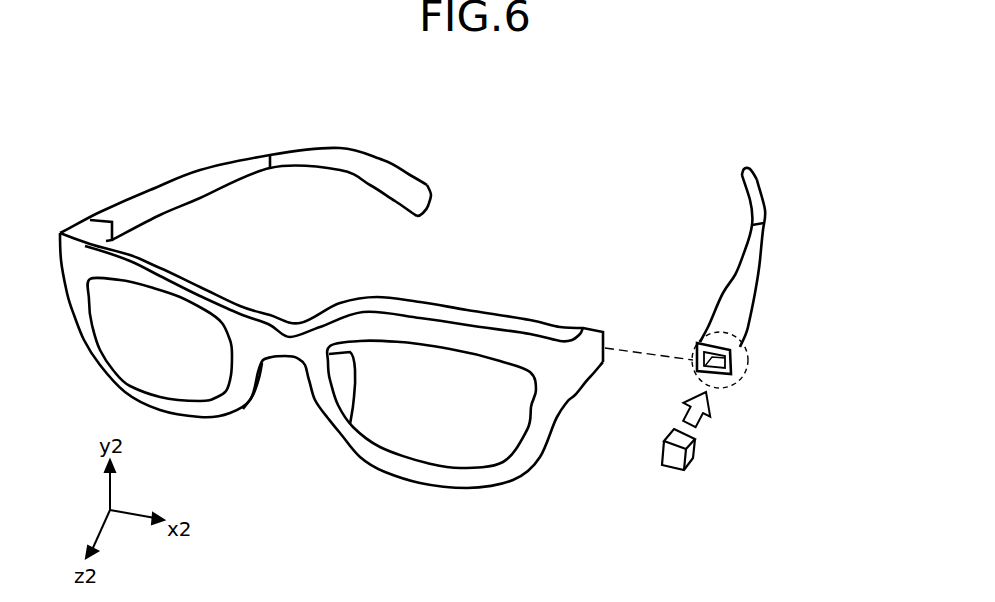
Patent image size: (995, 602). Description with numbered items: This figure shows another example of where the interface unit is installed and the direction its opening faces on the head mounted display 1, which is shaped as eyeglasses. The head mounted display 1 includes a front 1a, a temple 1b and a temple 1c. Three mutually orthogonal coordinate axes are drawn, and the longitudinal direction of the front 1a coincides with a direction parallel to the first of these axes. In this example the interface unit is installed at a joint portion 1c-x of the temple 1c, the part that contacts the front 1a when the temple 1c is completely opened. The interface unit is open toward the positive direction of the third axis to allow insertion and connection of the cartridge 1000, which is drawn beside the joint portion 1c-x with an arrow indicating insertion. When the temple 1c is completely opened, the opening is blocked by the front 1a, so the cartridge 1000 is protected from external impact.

The head mounted display 1 is at (285, 279).
The front 1a is at (463, 310).
The temple 1b is at (213, 160).
The temple 1c is at (752, 289).
The joint portion 1c-x is at (720, 383).
The cartridge 1000 is at (694, 459).